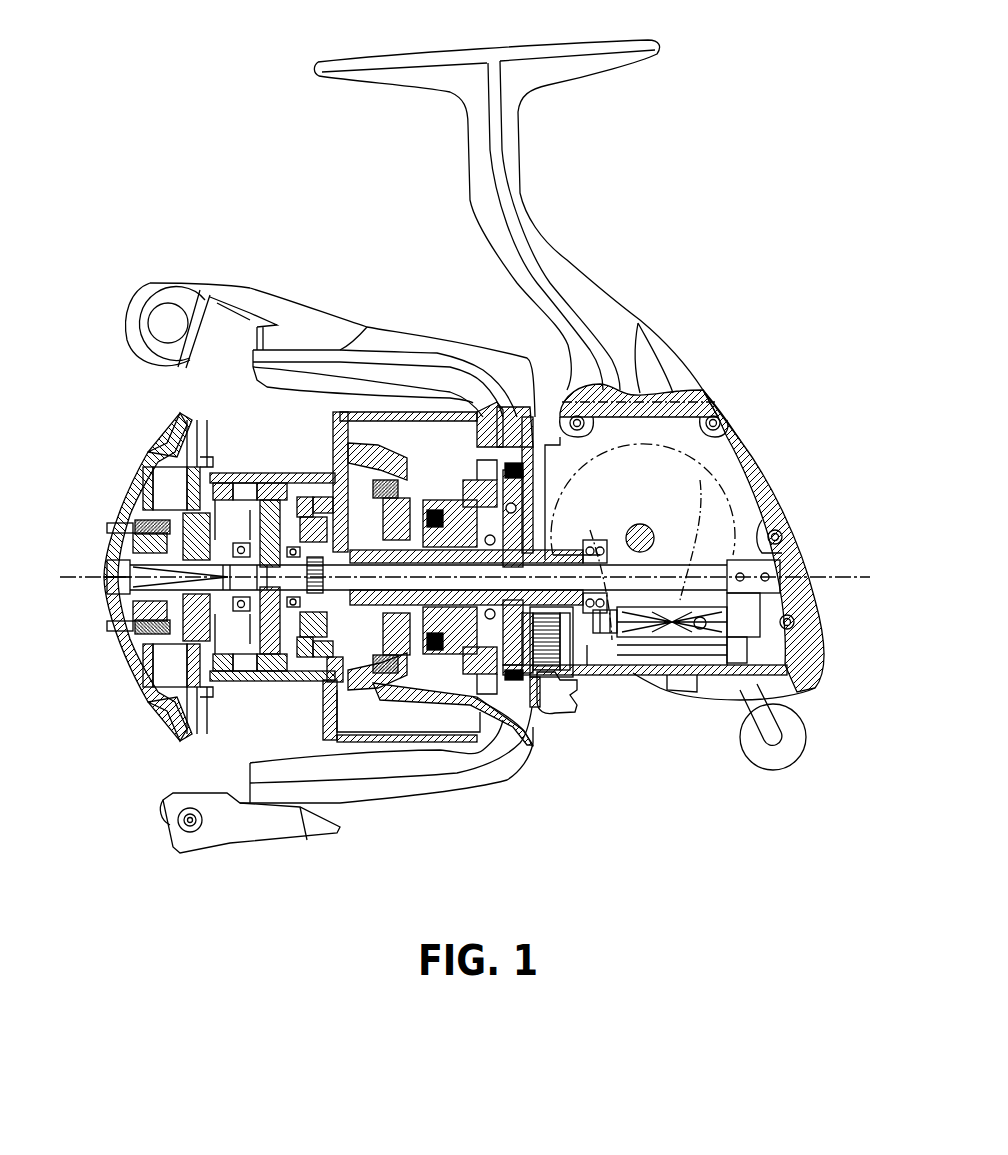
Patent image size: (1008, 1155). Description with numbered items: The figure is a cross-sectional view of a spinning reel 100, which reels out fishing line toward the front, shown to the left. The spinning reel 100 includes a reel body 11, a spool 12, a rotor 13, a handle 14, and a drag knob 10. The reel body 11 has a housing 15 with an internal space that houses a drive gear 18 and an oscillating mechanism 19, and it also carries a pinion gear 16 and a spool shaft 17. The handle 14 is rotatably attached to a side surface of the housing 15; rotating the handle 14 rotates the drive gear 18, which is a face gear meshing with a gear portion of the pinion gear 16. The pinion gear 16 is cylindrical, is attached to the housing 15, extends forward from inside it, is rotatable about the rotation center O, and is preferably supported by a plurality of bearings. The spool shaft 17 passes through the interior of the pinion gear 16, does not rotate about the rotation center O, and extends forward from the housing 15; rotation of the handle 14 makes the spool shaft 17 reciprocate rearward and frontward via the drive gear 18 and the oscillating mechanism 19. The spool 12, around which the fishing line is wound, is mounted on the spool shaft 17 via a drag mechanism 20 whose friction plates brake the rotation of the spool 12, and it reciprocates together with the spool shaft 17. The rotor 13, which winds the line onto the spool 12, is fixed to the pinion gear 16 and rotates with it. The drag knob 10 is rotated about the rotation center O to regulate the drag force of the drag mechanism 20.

The spinning reel 100 is at (690, 130).
The drag knob 10 is at (116, 470).
The reel body 11 is at (693, 370).
The spool 12 is at (250, 467).
The rotor 13 is at (430, 332).
The handle 14 is at (777, 780).
The housing 15 is at (712, 418).
The pinion gear 16 is at (553, 703).
The spool shaft 17 is at (634, 673).
The drive gear 18 is at (723, 441).
The oscillating mechanism 19 is at (687, 653).
The drag mechanism 20 is at (242, 667).